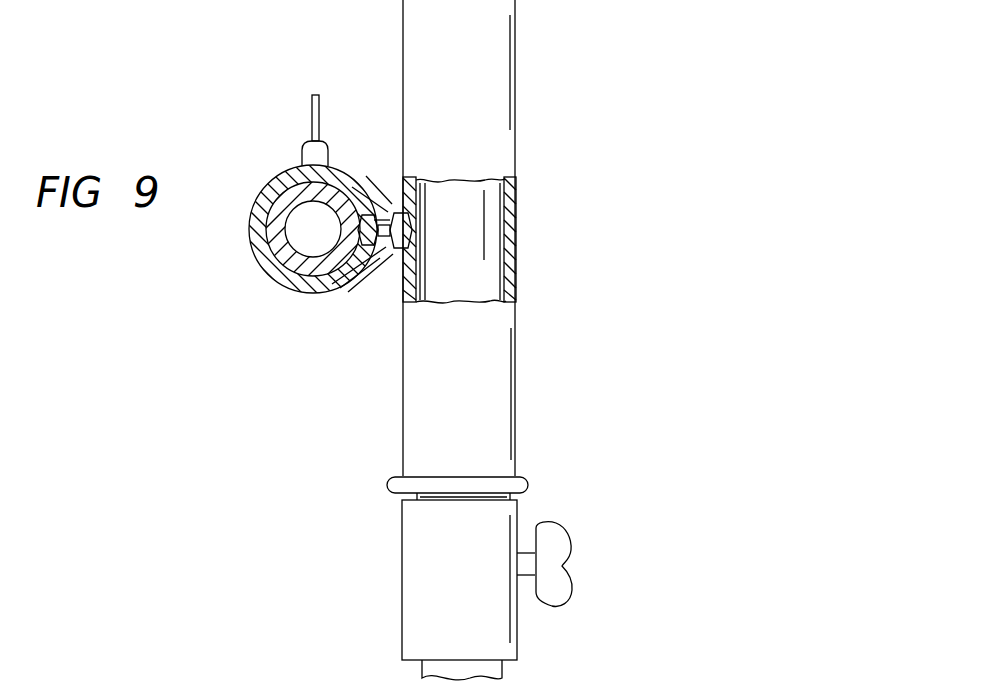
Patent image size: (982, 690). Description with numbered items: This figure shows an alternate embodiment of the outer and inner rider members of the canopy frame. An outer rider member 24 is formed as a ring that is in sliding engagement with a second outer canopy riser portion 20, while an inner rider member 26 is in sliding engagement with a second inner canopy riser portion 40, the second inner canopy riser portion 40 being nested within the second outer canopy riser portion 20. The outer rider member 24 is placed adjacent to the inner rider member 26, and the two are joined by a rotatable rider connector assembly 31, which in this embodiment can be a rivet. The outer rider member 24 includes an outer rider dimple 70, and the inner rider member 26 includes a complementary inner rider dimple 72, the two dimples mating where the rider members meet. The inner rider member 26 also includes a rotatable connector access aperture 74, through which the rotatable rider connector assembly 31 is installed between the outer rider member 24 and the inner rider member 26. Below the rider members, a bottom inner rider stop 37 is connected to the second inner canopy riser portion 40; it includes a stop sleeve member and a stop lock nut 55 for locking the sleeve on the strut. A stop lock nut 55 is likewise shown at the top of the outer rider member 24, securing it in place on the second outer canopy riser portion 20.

The second outer canopy riser portion 20 is at (270, 262).
The outer rider member 24 is at (275, 177).
The inner rider member 26 is at (503, 372).
The rotatable rider connector assembly 31 is at (377, 258).
The bottom inner rider stop 37 is at (430, 548).
The second inner canopy riser portion 40 is at (468, 218).
The stop lock nut 55 is at (317, 145).
The outer rider dimple 70 is at (382, 210).
The inner rider dimple 72 is at (390, 265).
The rotatable connector access aperture 74 is at (512, 250).